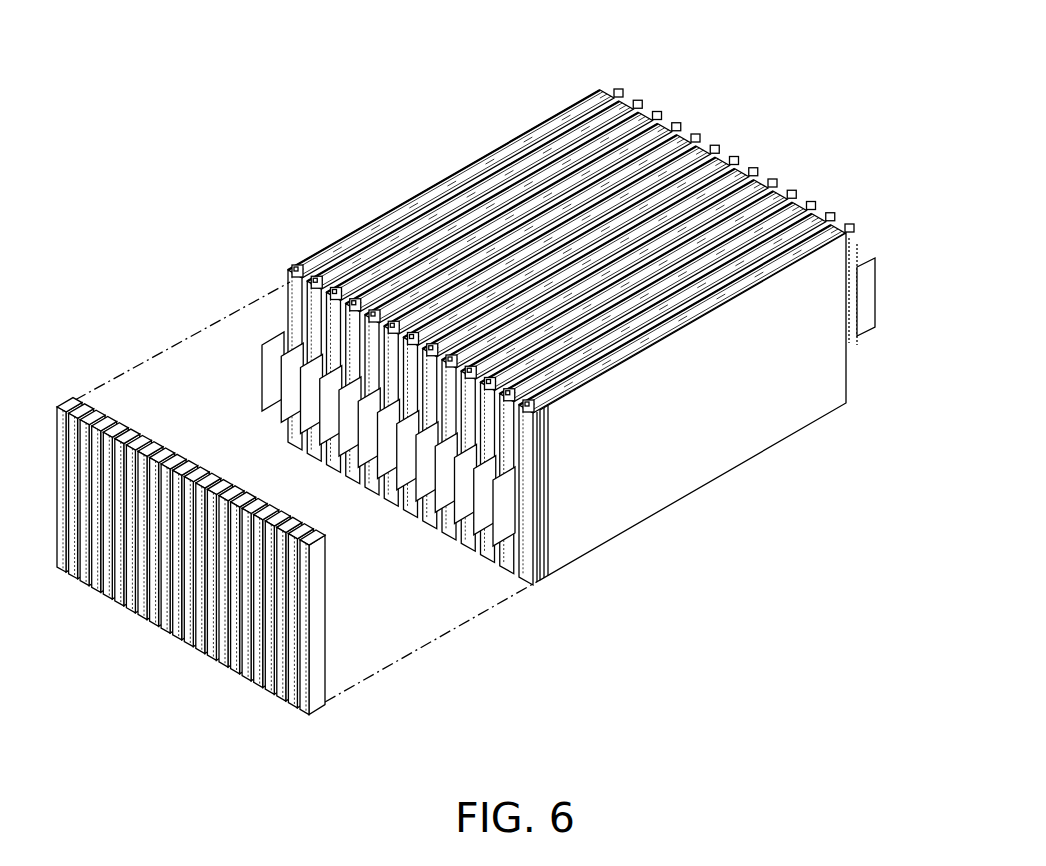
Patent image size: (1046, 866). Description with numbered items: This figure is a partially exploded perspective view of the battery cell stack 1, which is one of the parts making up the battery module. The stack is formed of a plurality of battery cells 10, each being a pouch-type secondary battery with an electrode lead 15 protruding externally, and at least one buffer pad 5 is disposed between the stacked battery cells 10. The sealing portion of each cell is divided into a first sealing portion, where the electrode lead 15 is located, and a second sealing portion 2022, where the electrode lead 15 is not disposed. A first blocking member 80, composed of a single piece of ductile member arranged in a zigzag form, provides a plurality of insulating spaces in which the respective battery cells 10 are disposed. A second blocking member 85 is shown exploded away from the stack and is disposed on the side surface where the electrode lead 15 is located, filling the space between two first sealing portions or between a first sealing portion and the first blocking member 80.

The battery cell stack 1 is at (491, 48).
The buffer pad 5 is at (742, 444).
The battery cell 10 is at (848, 362).
The electrode lead 15 is at (872, 288).
The first blocking member 80 is at (573, 383).
The second blocking member 85 is at (267, 657).
The second sealing portion 2022 is at (291, 267).